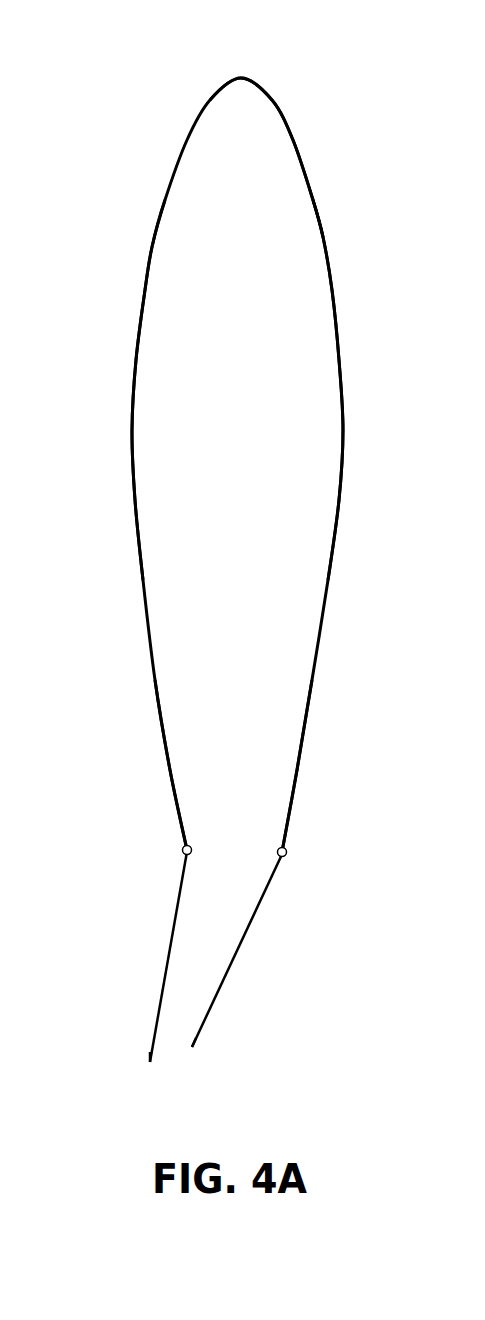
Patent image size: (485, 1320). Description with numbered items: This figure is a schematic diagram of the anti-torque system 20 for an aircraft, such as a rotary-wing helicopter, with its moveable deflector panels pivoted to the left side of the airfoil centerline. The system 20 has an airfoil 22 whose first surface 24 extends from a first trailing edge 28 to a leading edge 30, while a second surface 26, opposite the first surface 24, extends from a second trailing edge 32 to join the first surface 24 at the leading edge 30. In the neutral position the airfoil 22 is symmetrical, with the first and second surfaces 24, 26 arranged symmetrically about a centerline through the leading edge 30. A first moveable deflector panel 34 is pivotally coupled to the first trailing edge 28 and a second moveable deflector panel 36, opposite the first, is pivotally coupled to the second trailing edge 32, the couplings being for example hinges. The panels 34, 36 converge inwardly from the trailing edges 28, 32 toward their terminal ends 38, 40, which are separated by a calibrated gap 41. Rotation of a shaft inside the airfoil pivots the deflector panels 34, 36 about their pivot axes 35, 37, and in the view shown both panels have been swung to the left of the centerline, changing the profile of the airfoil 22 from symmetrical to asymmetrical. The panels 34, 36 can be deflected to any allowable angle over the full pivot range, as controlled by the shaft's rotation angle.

The anti-torque system 20 is at (132, 144).
The airfoil 22 is at (310, 180).
The first surface 24 is at (152, 247).
The second surface 26 is at (323, 237).
The first trailing edge 28 is at (184, 838).
The leading edge 30 is at (224, 82).
The second trailing edge 32 is at (286, 843).
The first moveable deflector panel 34 is at (172, 943).
The pivot axis 35 is at (182, 850).
The second moveable deflector panel 36 is at (243, 948).
The pivot axis 37 is at (287, 851).
The terminal end 38 is at (150, 1062).
The terminal end 40 is at (192, 1047).
The calibrated gap 41 is at (176, 1070).